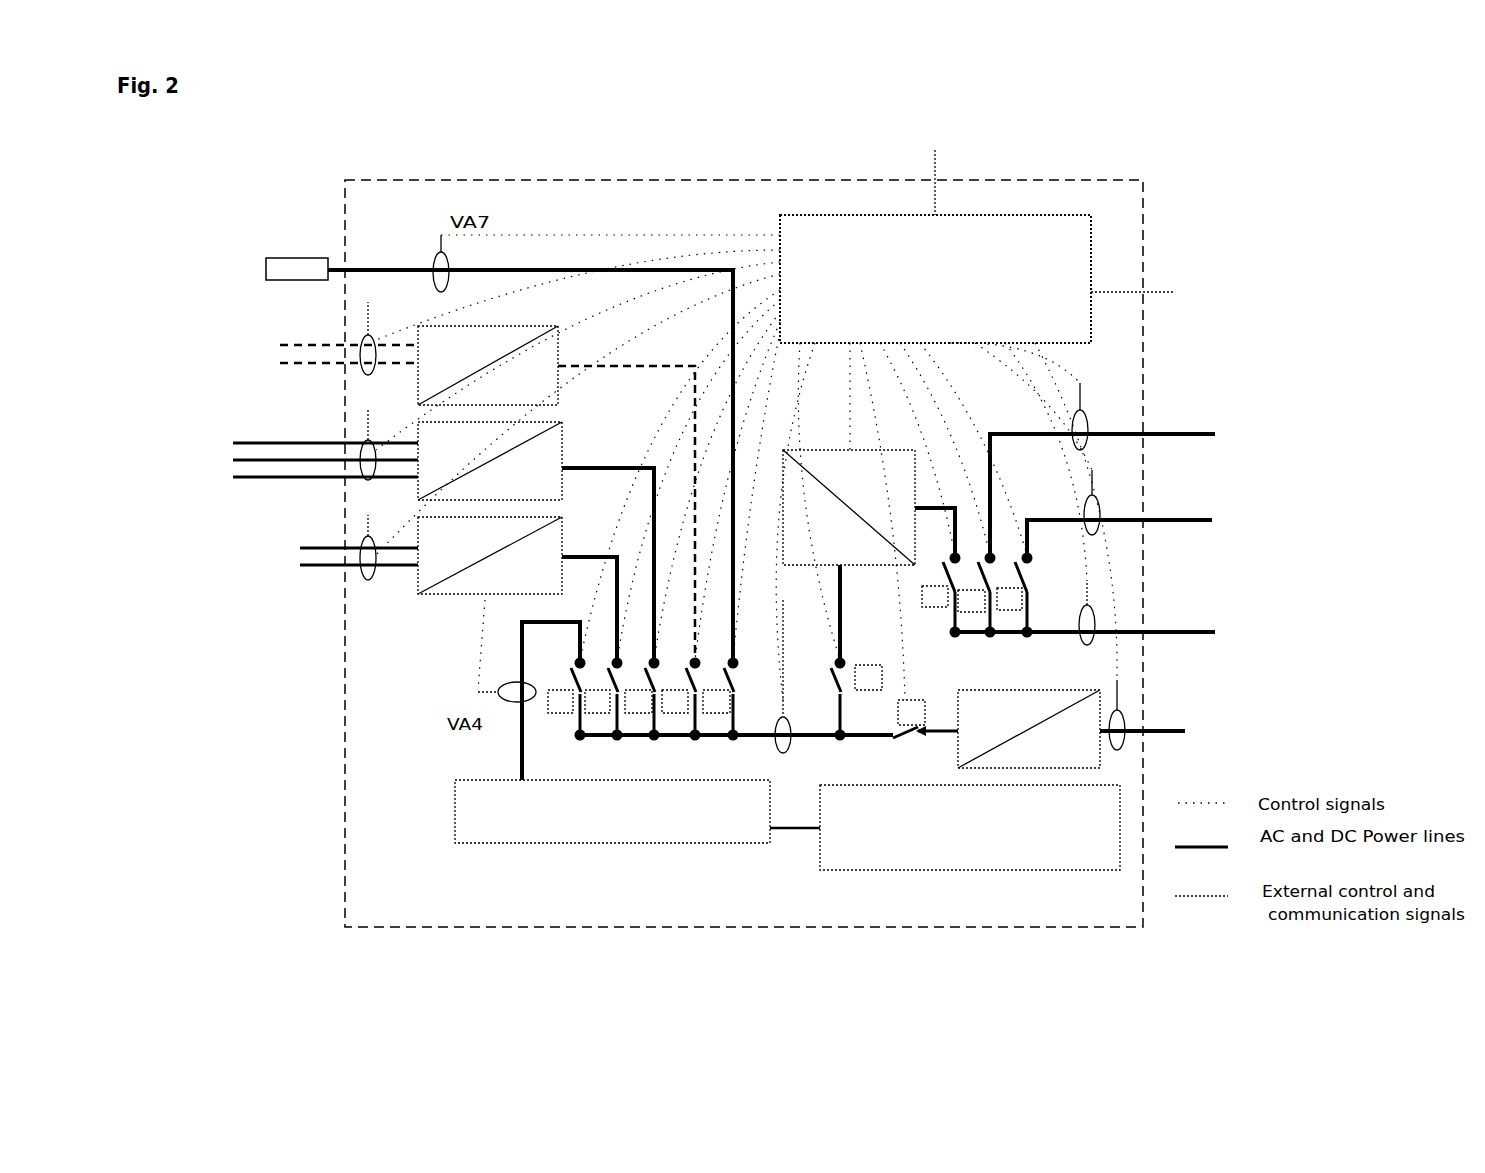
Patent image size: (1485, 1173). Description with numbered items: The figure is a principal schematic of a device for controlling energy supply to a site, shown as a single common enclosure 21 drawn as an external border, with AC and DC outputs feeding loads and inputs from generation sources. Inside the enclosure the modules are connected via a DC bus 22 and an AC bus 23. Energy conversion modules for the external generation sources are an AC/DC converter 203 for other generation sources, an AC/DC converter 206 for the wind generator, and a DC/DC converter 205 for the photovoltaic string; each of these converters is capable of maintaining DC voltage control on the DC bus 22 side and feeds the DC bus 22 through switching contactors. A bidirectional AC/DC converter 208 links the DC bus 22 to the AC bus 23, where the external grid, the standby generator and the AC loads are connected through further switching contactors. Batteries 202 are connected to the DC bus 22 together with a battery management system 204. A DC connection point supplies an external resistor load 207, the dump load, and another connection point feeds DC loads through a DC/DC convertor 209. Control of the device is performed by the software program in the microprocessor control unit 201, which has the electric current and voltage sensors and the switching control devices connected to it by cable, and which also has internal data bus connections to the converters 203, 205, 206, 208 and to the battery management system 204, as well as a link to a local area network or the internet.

The energy management device (external border) 21 is at (345, 657).
The DC bus 22 is at (580, 735).
The AC bus 23 is at (1030, 635).
The microprocessor control unit 201 is at (853, 212).
The batteries 202 is at (880, 873).
The AC/DC converter 203 is at (435, 380).
The battery management system 204 is at (598, 843).
The DC/DC converter 205 is at (410, 567).
The AC/DC converter 206 is at (310, 483).
The external resistor load 207 is at (262, 268).
The bidirectional AC/DC converter 208 is at (840, 445).
The DC/DC convertor 209 is at (1100, 745).